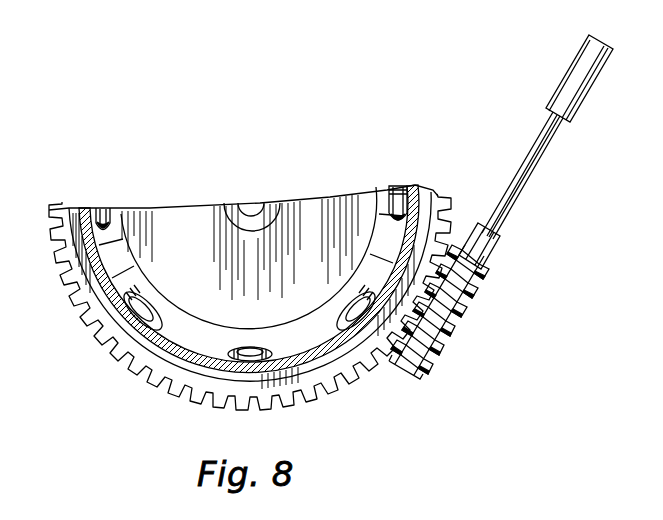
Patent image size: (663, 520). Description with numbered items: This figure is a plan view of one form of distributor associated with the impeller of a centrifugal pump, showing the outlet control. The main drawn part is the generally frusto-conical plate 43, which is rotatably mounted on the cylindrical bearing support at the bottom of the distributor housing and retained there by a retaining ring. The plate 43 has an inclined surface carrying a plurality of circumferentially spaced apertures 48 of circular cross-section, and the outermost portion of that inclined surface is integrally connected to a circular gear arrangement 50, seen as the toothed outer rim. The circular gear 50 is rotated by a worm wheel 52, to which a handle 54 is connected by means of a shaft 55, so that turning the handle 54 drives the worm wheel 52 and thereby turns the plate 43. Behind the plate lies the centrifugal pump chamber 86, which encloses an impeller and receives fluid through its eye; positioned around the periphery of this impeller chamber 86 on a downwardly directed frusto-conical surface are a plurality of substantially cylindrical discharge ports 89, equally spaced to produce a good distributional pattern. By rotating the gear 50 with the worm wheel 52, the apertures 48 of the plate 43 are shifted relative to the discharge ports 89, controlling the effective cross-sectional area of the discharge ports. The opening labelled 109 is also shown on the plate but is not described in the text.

The frusto-conical plate 43 is at (162, 362).
The circular gear arrangement 50 is at (154, 385).
The aperture 109 is at (251, 208).
The centrifugal pump chamber 86 is at (414, 184).
The discharge ports 89 is at (247, 347).
The apertures 48 is at (270, 344).
The handle 54 is at (570, 72).
The shaft 55 is at (508, 226).
The worm wheel 52 is at (464, 334).